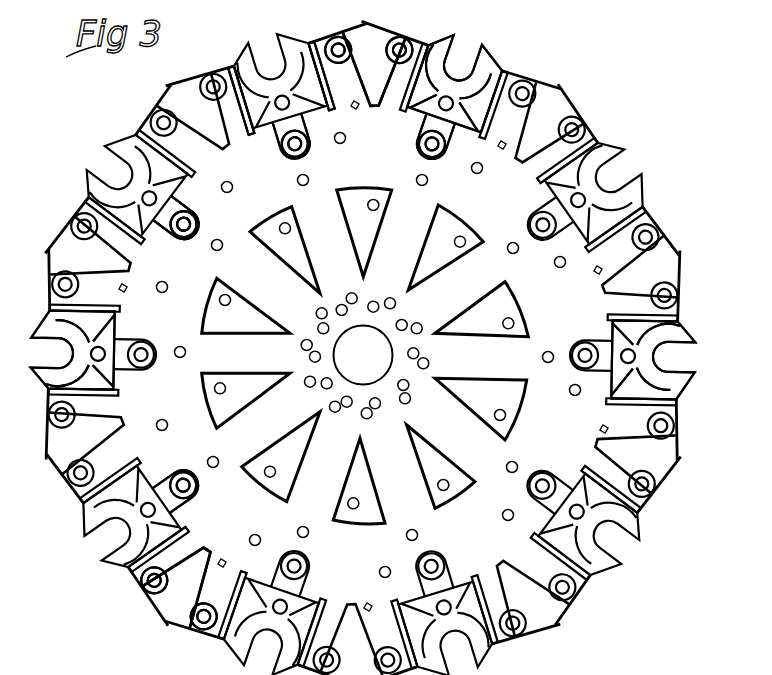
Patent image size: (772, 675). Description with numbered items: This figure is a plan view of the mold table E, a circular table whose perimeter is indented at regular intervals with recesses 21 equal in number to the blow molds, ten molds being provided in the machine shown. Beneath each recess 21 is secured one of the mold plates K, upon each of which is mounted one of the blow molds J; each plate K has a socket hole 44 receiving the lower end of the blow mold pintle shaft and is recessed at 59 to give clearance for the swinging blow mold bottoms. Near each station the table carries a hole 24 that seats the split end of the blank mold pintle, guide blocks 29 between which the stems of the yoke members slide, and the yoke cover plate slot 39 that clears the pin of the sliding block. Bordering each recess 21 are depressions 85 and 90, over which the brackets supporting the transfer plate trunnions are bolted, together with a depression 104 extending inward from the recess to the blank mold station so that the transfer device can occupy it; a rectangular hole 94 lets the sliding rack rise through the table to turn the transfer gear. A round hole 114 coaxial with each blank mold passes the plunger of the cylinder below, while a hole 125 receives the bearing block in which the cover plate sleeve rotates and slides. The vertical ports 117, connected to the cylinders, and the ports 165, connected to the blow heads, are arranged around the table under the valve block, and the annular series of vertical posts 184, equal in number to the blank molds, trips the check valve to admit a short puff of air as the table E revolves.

The recesses 21 is at (457, 80).
The hole 24 is at (296, 184).
The guide blocks 29 is at (347, 472).
The longitudinal slot 39 is at (201, 624).
The socket hole 44 is at (72, 350).
The recess 59 is at (684, 368).
The depression 85 is at (391, 96).
The depression 90 is at (286, 88).
The rectangular hole 94 is at (355, 110).
The depression 104 is at (290, 123).
The round hole 114 is at (446, 147).
The vertical port 117 is at (396, 414).
The hole 125 is at (228, 389).
The port 165 is at (380, 323).
The vertical posts 184 is at (163, 289).
The mold plates K is at (500, 44).
The blow molds J is at (700, 354).
The mold table E is at (371, 152).